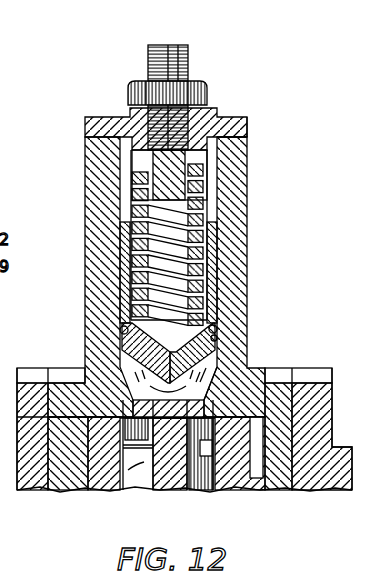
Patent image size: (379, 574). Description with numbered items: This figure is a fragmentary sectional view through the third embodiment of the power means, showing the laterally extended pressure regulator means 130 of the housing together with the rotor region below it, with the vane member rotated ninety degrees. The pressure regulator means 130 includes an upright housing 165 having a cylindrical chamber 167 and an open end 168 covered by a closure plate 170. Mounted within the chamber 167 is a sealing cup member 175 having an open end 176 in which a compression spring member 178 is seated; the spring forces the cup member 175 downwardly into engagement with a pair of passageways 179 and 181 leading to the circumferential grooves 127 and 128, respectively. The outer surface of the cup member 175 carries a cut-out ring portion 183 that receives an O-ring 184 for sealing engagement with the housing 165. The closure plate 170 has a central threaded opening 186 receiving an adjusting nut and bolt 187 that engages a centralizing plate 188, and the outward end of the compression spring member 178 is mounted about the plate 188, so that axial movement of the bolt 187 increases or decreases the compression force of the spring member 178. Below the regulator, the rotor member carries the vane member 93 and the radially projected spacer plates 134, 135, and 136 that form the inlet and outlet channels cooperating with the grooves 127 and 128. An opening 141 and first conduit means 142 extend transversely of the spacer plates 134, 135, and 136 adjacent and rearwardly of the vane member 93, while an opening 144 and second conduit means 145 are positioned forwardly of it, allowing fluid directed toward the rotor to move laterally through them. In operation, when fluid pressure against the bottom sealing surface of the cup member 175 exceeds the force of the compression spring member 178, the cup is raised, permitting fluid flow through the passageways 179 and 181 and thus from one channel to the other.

The pressure regulator means 130 is at (254, 228).
The open end 168 is at (140, 155).
The cylindrical chamber 167 is at (246, 133).
The closure plate 170 is at (248, 128).
The compression spring member 178 is at (128, 165).
The upright housing 165 is at (247, 192).
The adjusting nut and bolt 187 is at (176, 62).
The centralizing plate 188 is at (122, 150).
The central threaded opening 186 is at (185, 135).
The open end 176 is at (212, 250).
The passageway 179 is at (110, 385).
The cut-out ring portion 183 is at (216, 326).
The O-ring 184 is at (218, 334).
The sealing cup member 175 is at (202, 345).
The passageway 181 is at (214, 362).
The vane member 93 is at (263, 384).
The spacer plate 134 is at (63, 490).
The circumferential groove 127 is at (110, 402).
The circumferential groove 128 is at (333, 367).
The spacer plate 136 is at (228, 470).
The spacer plate 135 is at (165, 475).
The opening 141 is at (115, 470).
The second conduit means 145 is at (150, 468).
The first conduit means 142 is at (206, 475).
The opening 144 is at (222, 478).